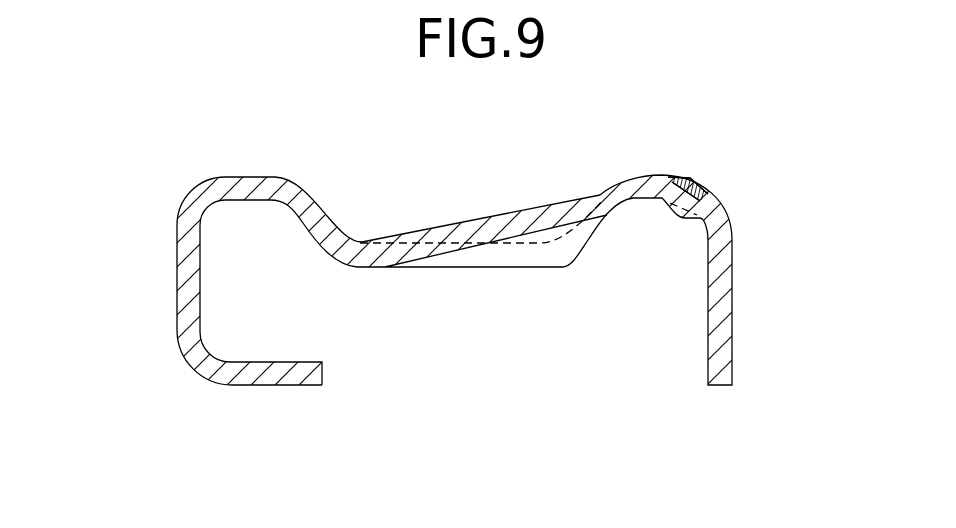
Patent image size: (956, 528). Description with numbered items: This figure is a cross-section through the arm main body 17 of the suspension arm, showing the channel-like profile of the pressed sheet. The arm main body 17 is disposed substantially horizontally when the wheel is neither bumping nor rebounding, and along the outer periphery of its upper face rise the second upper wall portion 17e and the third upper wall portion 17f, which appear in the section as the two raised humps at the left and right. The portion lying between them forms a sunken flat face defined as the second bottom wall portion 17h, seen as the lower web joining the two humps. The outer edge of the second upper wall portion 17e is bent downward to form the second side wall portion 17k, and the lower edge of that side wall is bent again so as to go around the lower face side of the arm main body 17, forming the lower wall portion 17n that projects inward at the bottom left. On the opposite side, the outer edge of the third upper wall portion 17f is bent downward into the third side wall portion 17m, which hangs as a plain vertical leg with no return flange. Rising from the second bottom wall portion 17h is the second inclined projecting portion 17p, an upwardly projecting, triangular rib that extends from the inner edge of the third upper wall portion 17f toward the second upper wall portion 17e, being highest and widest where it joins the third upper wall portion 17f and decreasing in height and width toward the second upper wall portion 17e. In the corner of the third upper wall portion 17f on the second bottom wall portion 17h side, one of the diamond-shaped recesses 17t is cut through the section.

The arm main body 17 is at (733, 242).
The second upper wall portion 17e is at (248, 183).
The third upper wall portion 17f is at (635, 178).
The second side wall portion 17k is at (176, 282).
The lower wall portion 17n is at (277, 375).
The third side wall portion 17m is at (724, 312).
The second inclined projecting portion 17p is at (475, 227).
The second bottom wall portion 17h is at (536, 240).
The diamond-shaped recess 17t is at (697, 196).